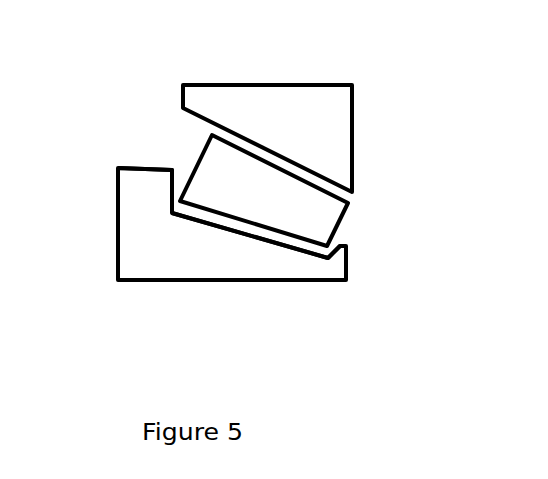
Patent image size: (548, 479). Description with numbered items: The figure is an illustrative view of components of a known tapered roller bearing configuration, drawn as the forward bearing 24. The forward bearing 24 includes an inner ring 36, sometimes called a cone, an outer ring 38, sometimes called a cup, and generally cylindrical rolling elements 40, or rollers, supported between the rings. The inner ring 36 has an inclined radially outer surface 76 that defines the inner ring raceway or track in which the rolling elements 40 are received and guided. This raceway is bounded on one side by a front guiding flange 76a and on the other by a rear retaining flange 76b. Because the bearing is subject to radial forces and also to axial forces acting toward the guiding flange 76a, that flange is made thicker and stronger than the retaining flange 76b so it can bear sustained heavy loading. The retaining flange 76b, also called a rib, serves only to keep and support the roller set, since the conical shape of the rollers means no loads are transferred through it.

The forward bearing 24 is at (378, 78).
The inner ring 36 is at (118, 245).
The outer ring 38 is at (182, 100).
The rolling elements 40 is at (346, 212).
The inclined radially outer surface 76 is at (236, 232).
The front guiding flange 76a is at (174, 182).
The rear retaining flange 76b is at (341, 235).